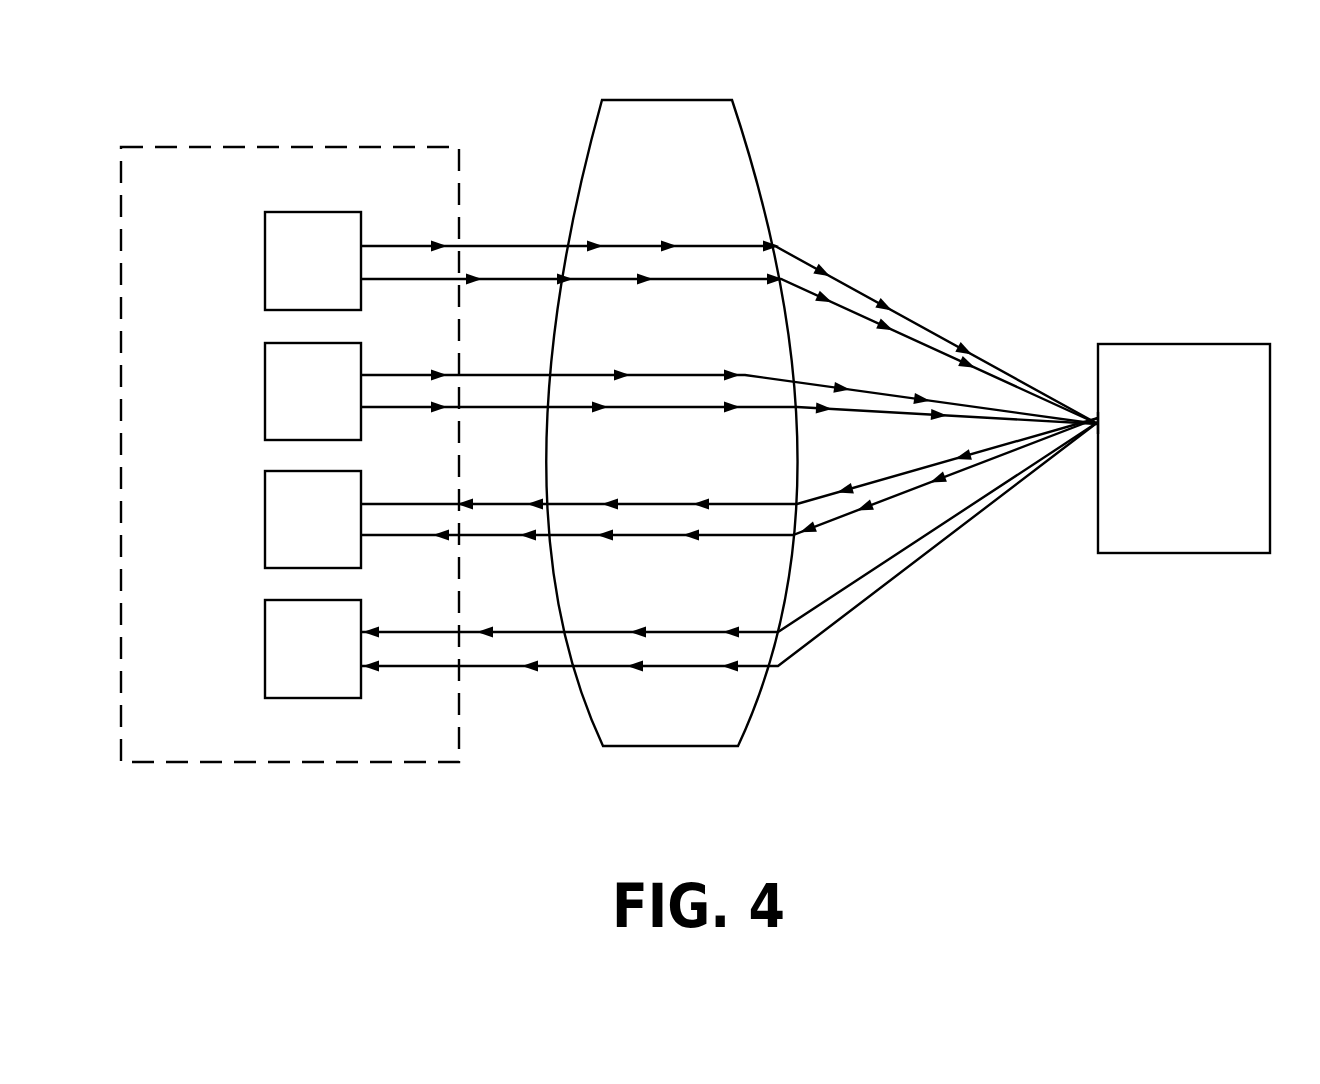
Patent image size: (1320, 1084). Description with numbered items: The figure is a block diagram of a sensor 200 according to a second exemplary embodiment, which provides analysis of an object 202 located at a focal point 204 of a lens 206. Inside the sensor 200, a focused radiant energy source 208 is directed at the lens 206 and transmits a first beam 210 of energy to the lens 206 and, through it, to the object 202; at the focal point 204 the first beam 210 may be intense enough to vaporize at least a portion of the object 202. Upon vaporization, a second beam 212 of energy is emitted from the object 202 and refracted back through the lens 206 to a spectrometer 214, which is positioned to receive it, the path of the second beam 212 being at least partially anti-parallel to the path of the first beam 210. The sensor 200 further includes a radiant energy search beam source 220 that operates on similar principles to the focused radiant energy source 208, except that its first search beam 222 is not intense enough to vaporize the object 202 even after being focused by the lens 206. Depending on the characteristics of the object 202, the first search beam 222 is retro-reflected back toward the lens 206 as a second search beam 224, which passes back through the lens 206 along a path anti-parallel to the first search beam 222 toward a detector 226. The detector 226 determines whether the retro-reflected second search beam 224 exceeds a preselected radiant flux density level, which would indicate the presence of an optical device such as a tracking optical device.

The sensor 200 is at (188, 144).
The object 202 is at (1175, 343).
The focal point 204 is at (1090, 447).
The lens 206 is at (712, 750).
The focused radiant energy source 208 is at (333, 211).
The first beam 210 is at (500, 243).
The second beam 212 is at (495, 670).
The spectrometer 214 is at (313, 700).
The radiant energy search beam source 220 is at (264, 380).
The first search beam 222 is at (607, 373).
The second search beam 224 is at (640, 538).
The detector 226 is at (264, 522).